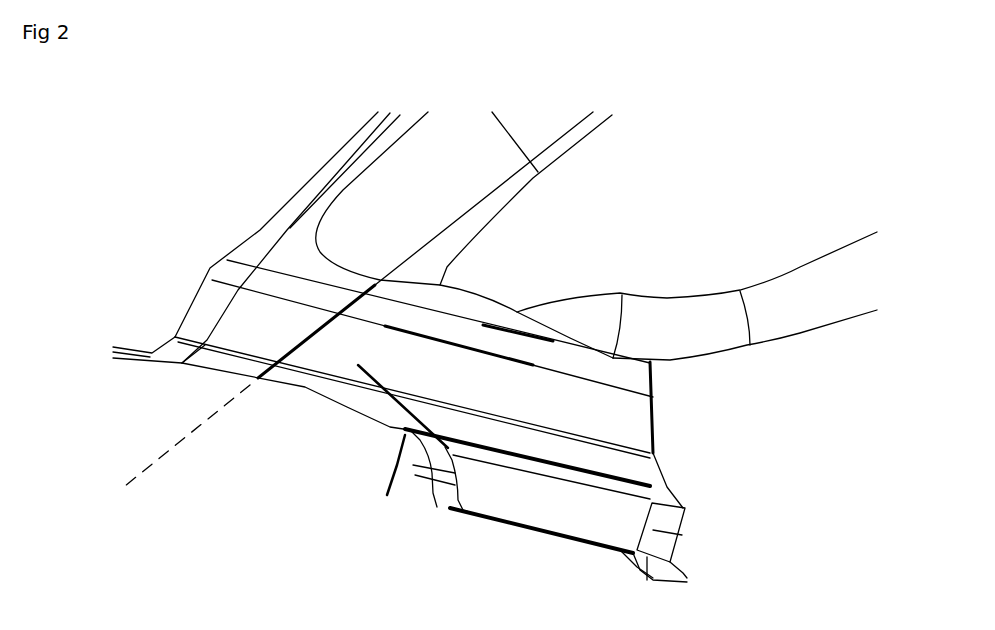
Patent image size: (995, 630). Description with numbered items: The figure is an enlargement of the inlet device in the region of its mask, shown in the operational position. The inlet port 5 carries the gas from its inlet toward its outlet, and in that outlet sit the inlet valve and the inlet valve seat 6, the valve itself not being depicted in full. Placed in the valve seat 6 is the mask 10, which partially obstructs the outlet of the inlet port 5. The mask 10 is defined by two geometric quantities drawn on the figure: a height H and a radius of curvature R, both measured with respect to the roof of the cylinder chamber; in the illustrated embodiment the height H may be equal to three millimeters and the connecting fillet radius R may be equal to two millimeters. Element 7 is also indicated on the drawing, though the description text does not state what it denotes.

The inlet port 5 is at (353, 160).
The inlet valve seat 6 is at (197, 302).
The center pillar 7 is at (650, 363).
The mask 10 is at (655, 530).
The radius of curvature R is at (392, 396).
The height H is at (370, 465).